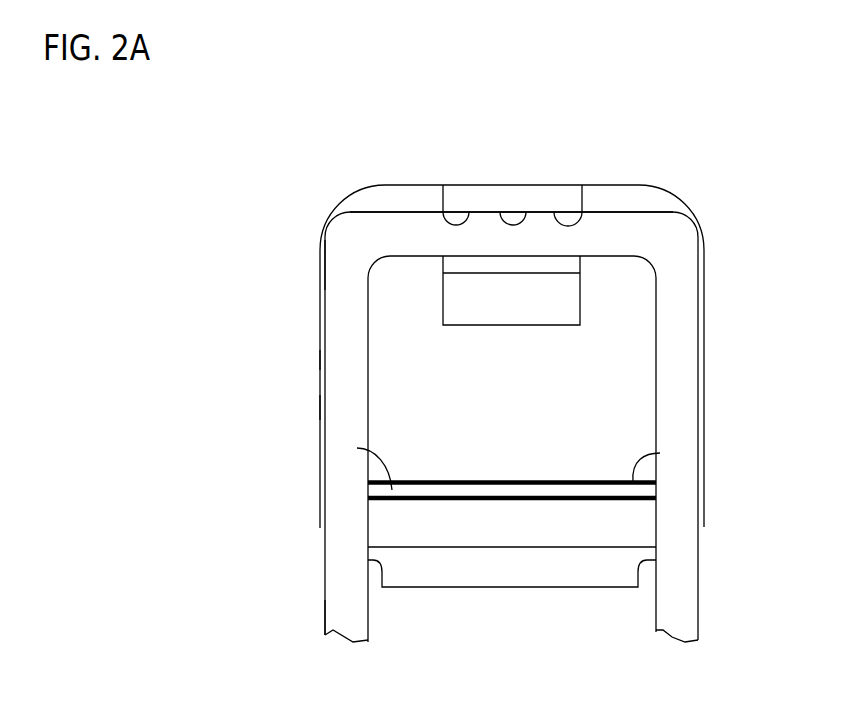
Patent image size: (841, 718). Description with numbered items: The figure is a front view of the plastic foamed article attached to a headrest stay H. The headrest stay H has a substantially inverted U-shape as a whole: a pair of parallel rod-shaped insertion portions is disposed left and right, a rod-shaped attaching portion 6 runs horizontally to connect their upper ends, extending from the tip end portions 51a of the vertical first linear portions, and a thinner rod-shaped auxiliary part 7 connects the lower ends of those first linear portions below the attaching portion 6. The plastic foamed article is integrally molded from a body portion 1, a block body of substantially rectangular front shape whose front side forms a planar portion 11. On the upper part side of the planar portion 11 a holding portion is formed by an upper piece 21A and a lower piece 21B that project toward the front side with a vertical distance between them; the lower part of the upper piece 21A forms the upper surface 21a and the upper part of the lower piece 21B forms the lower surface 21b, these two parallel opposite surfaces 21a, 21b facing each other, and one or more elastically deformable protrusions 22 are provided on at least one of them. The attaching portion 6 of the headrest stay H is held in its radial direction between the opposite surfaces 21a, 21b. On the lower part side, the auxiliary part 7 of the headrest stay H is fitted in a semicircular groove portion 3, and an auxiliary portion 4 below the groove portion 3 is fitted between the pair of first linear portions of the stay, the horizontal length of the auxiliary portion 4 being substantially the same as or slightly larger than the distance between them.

The body portion 1 is at (630, 338).
The planar portion 11 is at (602, 375).
The upper piece 21A is at (570, 200).
The lower piece 21B is at (452, 295).
The upper surface 21a is at (482, 212).
The lower surface 21b is at (538, 256).
The protrusions 22 is at (456, 220).
The groove portion 3 is at (660, 453).
The auxiliary portion 4 is at (540, 607).
The tip end portions 51a is at (337, 280).
The attaching portion 6 is at (412, 237).
The auxiliary part 7 is at (357, 448).
The headrest stay H is at (333, 358).